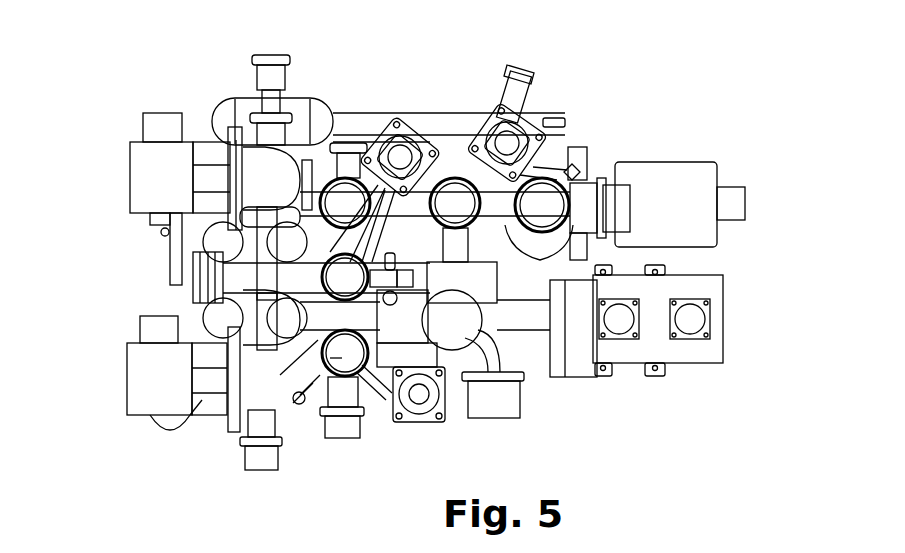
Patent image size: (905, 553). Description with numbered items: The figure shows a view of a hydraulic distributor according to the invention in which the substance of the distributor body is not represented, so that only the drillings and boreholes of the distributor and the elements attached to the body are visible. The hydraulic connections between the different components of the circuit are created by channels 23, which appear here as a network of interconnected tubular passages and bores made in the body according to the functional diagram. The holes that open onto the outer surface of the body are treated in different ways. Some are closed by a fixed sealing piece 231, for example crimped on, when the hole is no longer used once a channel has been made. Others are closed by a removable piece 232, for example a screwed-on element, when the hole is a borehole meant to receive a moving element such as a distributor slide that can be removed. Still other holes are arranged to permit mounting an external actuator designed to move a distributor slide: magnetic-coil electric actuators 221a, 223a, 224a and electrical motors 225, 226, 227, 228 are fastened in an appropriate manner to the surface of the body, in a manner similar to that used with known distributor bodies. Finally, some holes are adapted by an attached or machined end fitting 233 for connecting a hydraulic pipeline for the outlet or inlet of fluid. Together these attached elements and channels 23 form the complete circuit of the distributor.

The channels 23 is at (420, 207).
The magnetic-coil electric actuator 221a is at (503, 143).
The magnetic-coil electric actuator 223a is at (418, 393).
The magnetic-coil electric actuator 224a is at (400, 155).
The electrical motor 225 is at (698, 228).
The electrical motor 226 is at (160, 181).
The electrical motor 227 is at (150, 368).
The electrical motor 228 is at (688, 372).
The fixed sealing piece 231 is at (262, 103).
The removable piece 232 is at (576, 166).
The end fitting 233 is at (180, 270).